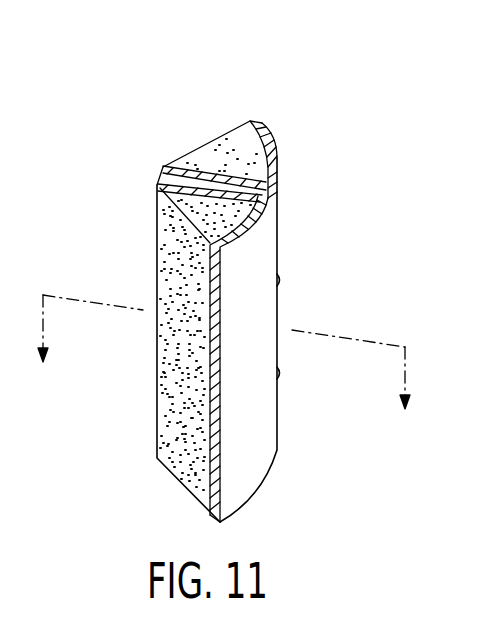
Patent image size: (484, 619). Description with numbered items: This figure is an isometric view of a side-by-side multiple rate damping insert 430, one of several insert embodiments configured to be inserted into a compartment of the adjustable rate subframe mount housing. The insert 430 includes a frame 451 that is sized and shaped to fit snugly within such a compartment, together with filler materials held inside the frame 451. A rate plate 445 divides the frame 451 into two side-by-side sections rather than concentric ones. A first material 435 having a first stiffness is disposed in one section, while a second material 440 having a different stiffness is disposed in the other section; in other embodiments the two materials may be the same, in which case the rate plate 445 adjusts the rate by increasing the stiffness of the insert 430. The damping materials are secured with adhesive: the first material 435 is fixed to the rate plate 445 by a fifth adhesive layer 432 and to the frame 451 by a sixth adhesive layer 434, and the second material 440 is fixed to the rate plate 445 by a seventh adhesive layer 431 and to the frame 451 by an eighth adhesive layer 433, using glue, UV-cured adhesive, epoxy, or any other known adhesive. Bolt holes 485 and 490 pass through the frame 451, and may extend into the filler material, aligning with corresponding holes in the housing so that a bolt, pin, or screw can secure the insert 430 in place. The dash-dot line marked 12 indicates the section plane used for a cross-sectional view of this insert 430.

The side-by-side damping insert 430 is at (305, 91).
The seventh adhesive layer 431 is at (157, 183).
The fifth adhesive layer 432 is at (163, 168).
The eighth adhesive layer 433 is at (213, 500).
The sixth adhesive layer 434 is at (252, 127).
The first material 435 is at (180, 162).
The second material 440 is at (268, 208).
The rate plate 445 is at (202, 182).
The frame 451 is at (270, 168).
The bolt hole 485 is at (283, 280).
The bolt hole 490 is at (283, 373).
The section line 12- 12 is at (224, 375).